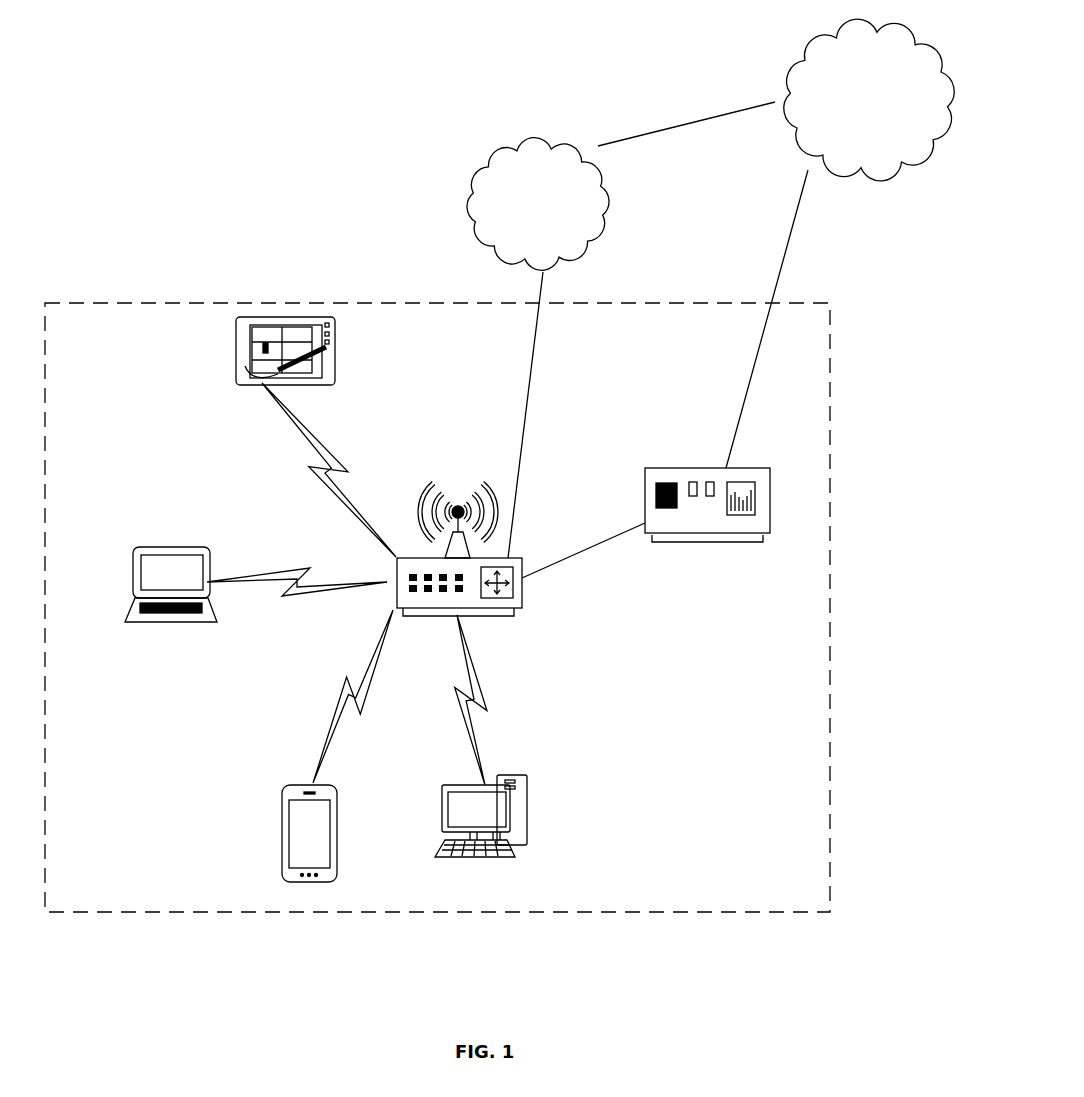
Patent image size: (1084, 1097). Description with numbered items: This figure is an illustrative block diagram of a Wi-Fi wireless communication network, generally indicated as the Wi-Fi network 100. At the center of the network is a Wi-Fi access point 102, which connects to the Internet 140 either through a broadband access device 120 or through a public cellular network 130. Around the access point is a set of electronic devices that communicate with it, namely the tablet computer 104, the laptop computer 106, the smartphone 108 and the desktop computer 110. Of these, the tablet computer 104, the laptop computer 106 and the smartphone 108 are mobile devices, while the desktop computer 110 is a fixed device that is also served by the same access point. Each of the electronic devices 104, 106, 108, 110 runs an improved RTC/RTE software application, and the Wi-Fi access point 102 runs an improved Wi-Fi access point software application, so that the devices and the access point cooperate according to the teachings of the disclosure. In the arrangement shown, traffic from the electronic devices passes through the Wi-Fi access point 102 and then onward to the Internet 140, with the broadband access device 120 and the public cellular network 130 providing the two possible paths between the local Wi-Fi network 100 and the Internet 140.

The Wi-Fi network 100 is at (185, 302).
The Wi-Fi access point 102 is at (515, 614).
The tablet computer 104 is at (333, 368).
The laptop computer 106 is at (136, 560).
The smartphone 108 is at (290, 822).
The desktop computer 110 is at (520, 845).
The broadband access device 120 is at (712, 540).
The public cellular network 130 is at (457, 200).
The Internet 140 is at (808, 33).